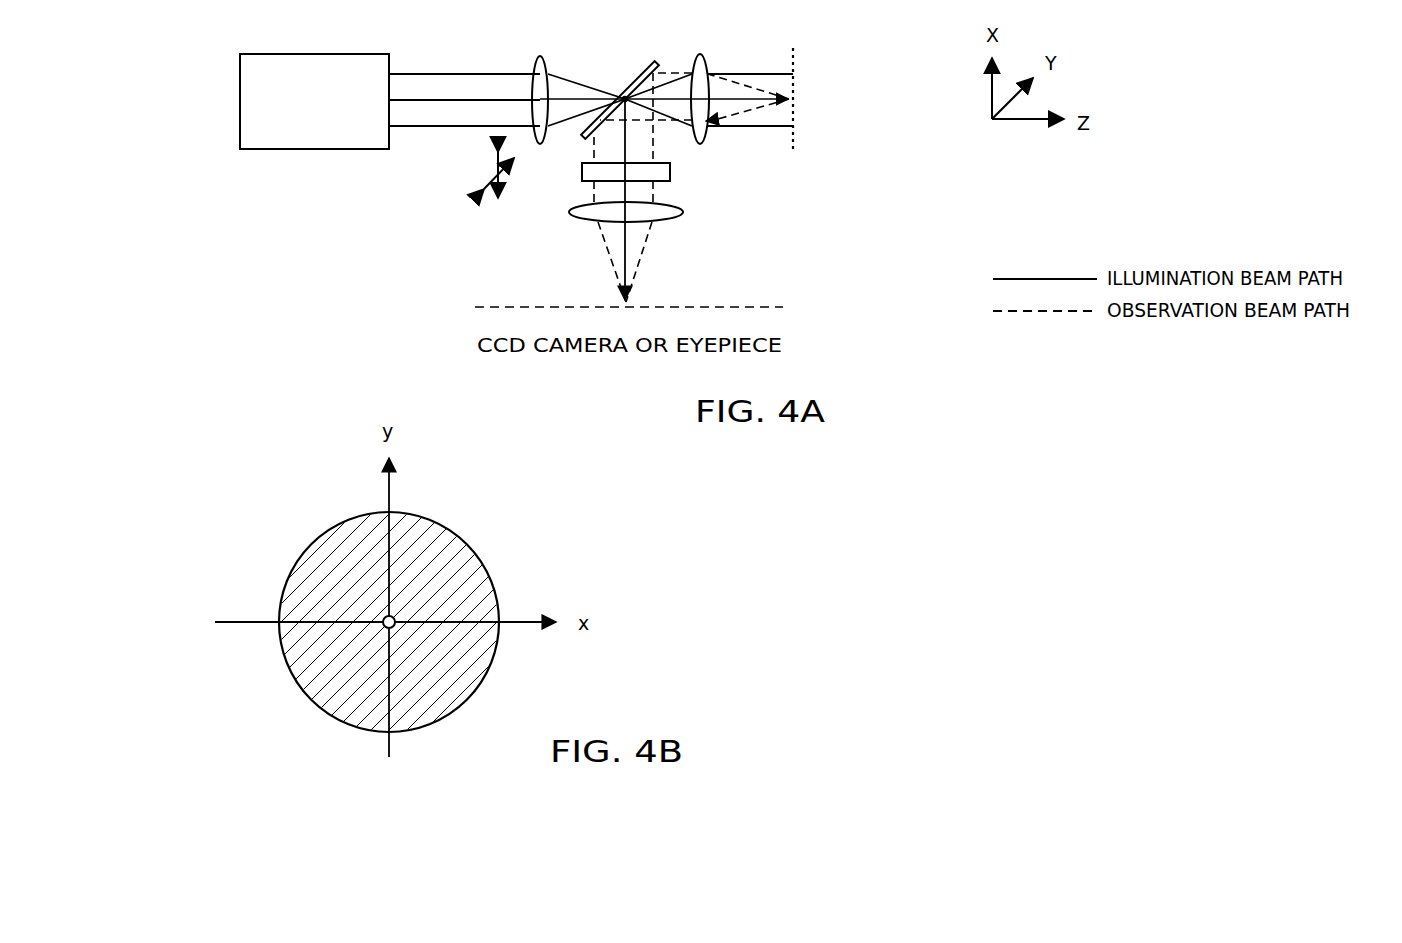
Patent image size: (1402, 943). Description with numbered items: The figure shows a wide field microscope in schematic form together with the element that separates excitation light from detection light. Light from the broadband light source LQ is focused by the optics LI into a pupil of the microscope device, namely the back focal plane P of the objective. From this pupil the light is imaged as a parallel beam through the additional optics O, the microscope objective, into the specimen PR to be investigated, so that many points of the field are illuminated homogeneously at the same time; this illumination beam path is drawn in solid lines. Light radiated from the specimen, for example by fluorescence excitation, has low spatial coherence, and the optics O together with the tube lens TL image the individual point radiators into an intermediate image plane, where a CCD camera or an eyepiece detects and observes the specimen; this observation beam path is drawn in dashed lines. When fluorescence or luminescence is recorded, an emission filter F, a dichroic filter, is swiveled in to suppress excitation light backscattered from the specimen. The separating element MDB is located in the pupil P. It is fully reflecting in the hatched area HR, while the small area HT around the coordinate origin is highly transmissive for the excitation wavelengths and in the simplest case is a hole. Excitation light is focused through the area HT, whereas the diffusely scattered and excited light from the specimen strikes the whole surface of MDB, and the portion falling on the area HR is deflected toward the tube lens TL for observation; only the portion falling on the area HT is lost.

In FIG. 4A, the light source LQ is at (314, 116).
In FIG. 4A, the optics LI is at (541, 83).
In FIG. 4A, the back focal plane P is at (622, 62).
In FIG. 4A, the element for separation of excitation light and detection light MDB is at (620, 98).
In FIG. 4A, the optics O is at (700, 83).
In FIG. 4A, the specimen PR is at (793, 87).
In FIG. 4A, the emission filter F is at (638, 175).
In FIG. 4A, the tube lens TL is at (644, 213).
In FIG. 4B, the fully reflecting area HR is at (318, 572).
In FIG. 4B, the highly transmissive area HT is at (400, 610).